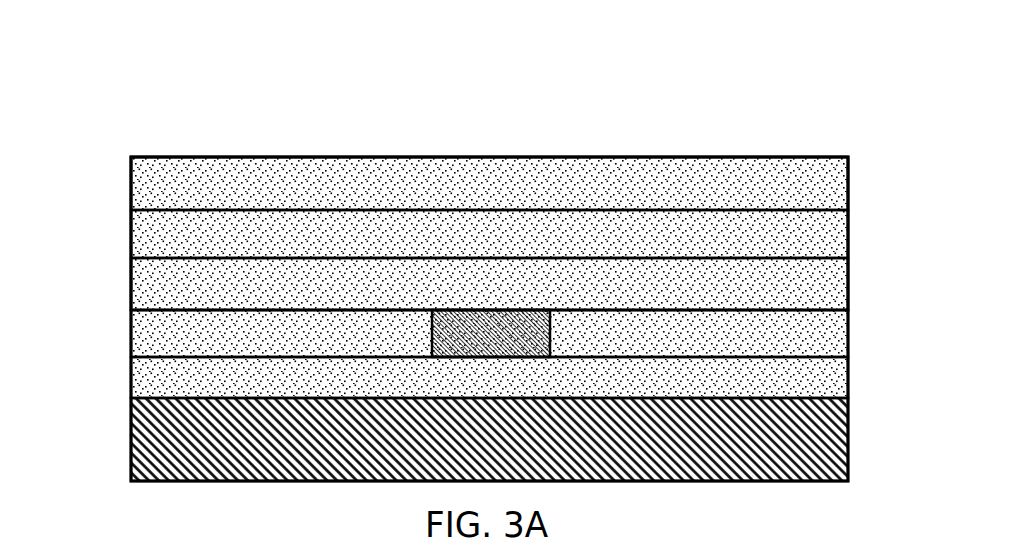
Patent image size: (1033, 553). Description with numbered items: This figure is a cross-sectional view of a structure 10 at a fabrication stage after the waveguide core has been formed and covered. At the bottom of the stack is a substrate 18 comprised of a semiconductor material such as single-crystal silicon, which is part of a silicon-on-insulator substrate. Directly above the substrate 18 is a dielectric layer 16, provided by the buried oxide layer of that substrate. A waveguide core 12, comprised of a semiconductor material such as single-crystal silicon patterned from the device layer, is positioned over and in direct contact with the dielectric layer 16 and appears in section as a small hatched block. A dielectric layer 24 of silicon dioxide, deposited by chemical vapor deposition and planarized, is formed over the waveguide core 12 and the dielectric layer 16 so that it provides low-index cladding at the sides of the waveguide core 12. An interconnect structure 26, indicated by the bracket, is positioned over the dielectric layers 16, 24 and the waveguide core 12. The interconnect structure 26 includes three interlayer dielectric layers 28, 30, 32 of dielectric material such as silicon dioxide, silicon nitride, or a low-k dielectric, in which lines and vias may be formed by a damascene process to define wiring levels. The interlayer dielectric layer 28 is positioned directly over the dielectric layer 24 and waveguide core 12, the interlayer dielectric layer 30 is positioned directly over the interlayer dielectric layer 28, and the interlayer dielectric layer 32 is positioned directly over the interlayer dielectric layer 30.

The structure 10 is at (152, 91).
The waveguide core 12 is at (468, 336).
The dielectric layer 16 is at (825, 380).
The substrate 18 is at (828, 448).
The dielectric layer 24 is at (818, 335).
The interconnect structure 26 is at (106, 158).
The interlayer dielectric layer 28 is at (818, 292).
The interlayer dielectric layer 30 is at (817, 238).
The interlayer dielectric layer 32 is at (817, 193).